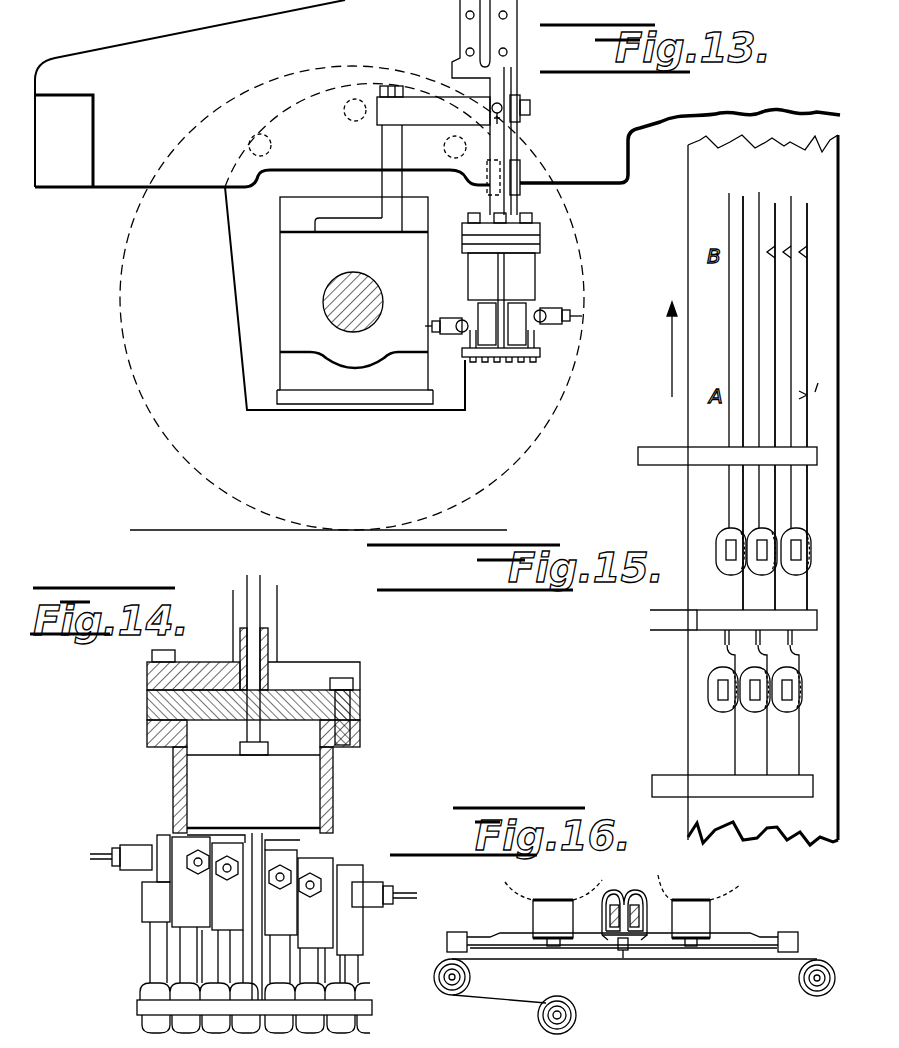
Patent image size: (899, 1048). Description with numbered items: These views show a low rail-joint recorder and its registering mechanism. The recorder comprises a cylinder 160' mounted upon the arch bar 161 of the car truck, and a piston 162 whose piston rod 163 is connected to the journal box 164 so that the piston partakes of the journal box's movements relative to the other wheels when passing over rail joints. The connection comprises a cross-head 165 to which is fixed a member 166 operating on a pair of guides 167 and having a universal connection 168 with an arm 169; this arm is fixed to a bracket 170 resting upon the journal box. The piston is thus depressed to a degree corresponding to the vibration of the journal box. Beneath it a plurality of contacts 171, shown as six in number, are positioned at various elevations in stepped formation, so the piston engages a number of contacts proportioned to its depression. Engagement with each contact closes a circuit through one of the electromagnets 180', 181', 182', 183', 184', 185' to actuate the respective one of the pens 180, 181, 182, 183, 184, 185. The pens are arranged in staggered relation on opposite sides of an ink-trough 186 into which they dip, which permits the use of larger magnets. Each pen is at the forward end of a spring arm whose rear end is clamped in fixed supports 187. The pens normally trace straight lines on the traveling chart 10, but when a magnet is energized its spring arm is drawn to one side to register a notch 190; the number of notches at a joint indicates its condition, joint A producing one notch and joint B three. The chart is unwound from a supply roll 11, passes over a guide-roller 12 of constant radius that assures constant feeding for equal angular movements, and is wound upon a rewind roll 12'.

In FIG. 13, the arch bar 161 is at (437, 265).
In FIG. 13, the guides 167 is at (511, 80).
In FIG. 13, the universal connection 168 is at (503, 108).
In FIG. 13, the member 166 is at (513, 140).
In FIG. 13, the cross-head 165 is at (517, 175).
In FIG. 13, the arm 169 is at (431, 113).
In FIG. 13, the bracket 170 is at (382, 182).
In FIG. 13, the journal box 164 is at (355, 300).
In FIG. 13, the cylinder 160' is at (503, 287).
In FIG. 14, the cylinder 160' is at (268, 741).
In FIG. 14, the piston rod 163 is at (255, 610).
In FIG. 14, the piston 162 is at (253, 769).
In FIG. 14, the contacts 171 is at (290, 865).
In FIG. 15, the notch 190 is at (820, 381).
In FIG. 15, the fixed supports 187 is at (668, 458).
In FIG. 16, the fixed supports 187 is at (453, 932).
In FIG. 15, the electromagnet 184' is at (813, 385).
In FIG. 16, the electromagnet 184' is at (547, 913).
In FIG. 15, the electromagnet 182' is at (764, 383).
In FIG. 15, the electromagnet 180' is at (724, 384).
In FIG. 15, the pen 184 is at (761, 404).
In FIG. 16, the pen 184 is at (590, 965).
In FIG. 15, the pen 182 is at (788, 407).
In FIG. 15, the pen 180 is at (812, 407).
In FIG. 15, the ink-trough 186 is at (705, 625).
In FIG. 16, the ink-trough 186 is at (626, 903).
In FIG. 15, the pen 185 is at (746, 702).
In FIG. 16, the pen 185 is at (648, 965).
In FIG. 15, the pen 183 is at (778, 702).
In FIG. 15, the pen 181 is at (811, 702).
In FIG. 15, the electromagnet 185' is at (717, 706).
In FIG. 16, the electromagnet 185' is at (708, 910).
In FIG. 15, the electromagnet 183' is at (757, 706).
In FIG. 15, the electromagnet 181' is at (805, 700).
In FIG. 16, the traveling chart 10 is at (760, 955).
In FIG. 16, the guide-roller 12 is at (452, 995).
In FIG. 16, the rewind roll 12' is at (584, 1019).
In FIG. 16, the supply roll 11 is at (818, 992).